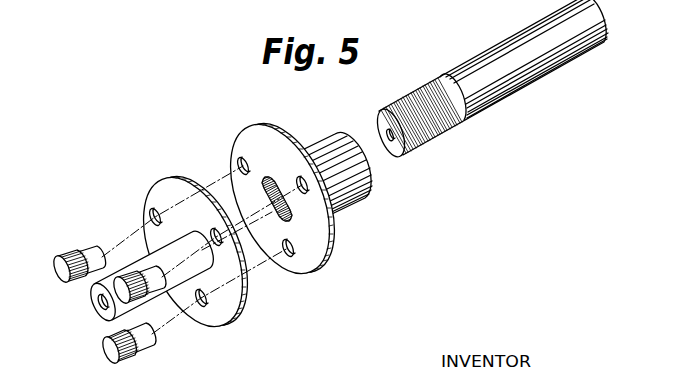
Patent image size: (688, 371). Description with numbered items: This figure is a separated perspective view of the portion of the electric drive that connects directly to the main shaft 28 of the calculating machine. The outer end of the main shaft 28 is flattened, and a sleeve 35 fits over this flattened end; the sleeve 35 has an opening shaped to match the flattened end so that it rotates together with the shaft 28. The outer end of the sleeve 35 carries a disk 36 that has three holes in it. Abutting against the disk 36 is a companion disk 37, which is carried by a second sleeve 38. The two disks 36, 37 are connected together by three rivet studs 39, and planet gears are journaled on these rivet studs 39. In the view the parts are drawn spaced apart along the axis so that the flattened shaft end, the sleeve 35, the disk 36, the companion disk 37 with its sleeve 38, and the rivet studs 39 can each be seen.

The main shaft 28 is at (487, 52).
The sleeve 35 is at (321, 148).
The disk 36 is at (245, 128).
The companion disk 37 is at (159, 183).
The sleeve 38 is at (93, 284).
The rivet studs 39 is at (68, 253).